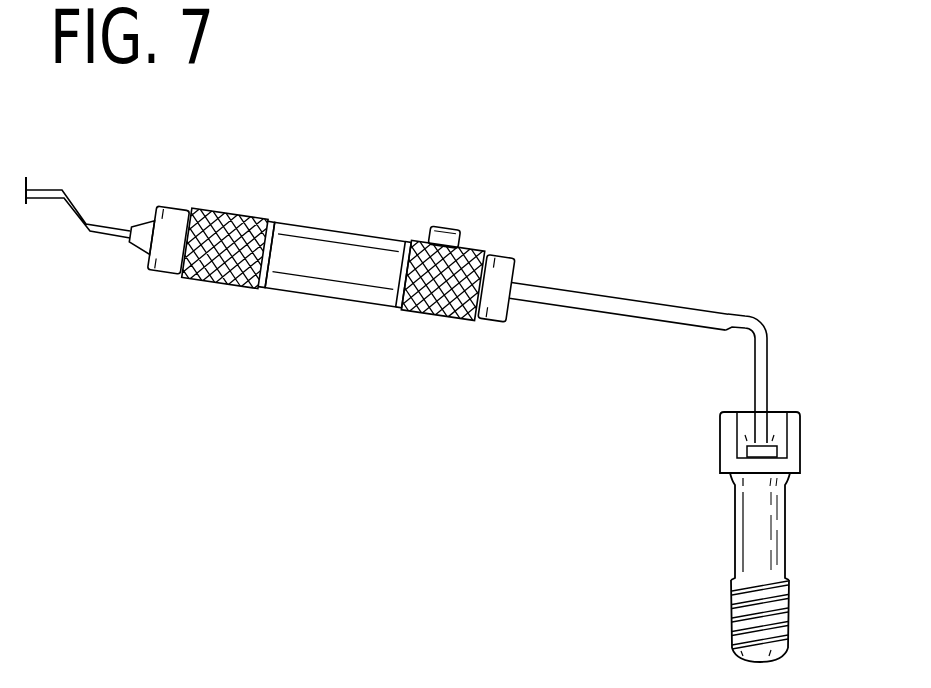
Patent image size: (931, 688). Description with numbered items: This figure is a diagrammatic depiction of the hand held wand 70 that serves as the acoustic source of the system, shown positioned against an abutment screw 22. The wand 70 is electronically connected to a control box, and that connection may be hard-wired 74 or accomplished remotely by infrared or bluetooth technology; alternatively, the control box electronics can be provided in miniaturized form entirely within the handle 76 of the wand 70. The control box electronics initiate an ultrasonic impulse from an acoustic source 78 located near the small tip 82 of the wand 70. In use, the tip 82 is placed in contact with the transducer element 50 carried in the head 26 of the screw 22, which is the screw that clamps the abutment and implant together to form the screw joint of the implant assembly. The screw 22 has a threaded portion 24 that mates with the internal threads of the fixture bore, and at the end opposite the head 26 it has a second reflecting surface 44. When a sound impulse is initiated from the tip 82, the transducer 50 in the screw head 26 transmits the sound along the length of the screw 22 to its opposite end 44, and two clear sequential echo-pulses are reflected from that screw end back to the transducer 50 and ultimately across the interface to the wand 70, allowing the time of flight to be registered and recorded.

The hand held wand 70 is at (386, 228).
The hard-wired electronic connection 74 is at (38, 191).
The handle 76 is at (244, 216).
The acoustic source 78 is at (762, 404).
The small tip 82 is at (757, 433).
The head 26 is at (800, 424).
The transducer element 50 is at (778, 449).
The abutment screw 22 is at (788, 550).
The threaded portion 24 is at (786, 614).
The second reflecting surface 44 is at (758, 663).